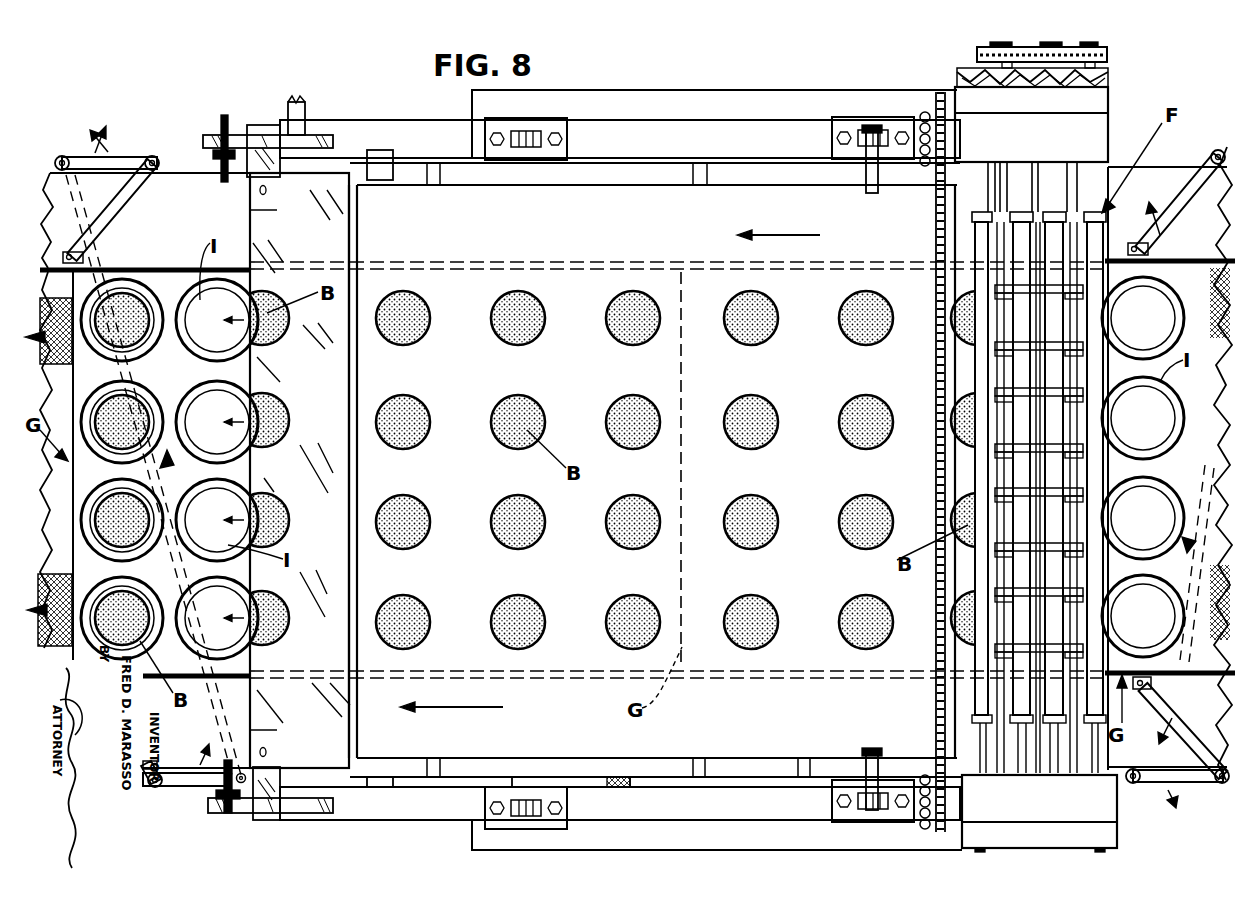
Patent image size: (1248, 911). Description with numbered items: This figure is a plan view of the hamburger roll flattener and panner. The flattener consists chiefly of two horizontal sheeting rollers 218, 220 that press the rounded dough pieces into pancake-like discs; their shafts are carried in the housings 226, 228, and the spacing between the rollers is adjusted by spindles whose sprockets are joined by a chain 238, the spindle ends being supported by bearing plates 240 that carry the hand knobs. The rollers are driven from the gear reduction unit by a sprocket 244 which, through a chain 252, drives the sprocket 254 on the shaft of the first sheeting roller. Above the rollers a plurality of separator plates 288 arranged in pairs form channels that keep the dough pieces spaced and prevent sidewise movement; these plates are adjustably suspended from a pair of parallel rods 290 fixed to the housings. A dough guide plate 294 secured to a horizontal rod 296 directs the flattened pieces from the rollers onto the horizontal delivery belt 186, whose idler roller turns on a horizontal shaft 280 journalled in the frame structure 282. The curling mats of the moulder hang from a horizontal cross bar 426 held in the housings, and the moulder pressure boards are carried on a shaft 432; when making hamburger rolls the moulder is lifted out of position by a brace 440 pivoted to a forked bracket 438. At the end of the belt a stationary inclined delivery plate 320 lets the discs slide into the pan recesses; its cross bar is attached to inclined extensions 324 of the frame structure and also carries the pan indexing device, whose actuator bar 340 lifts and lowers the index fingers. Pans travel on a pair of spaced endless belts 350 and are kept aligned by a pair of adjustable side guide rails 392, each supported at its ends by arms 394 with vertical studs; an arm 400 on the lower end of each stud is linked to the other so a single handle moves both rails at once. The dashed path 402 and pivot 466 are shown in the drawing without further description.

The horizontal belt 186 is at (963, 190).
The sheeting roller 218 is at (992, 688).
The sheeting roller 220 is at (1090, 368).
The housing 226 is at (1108, 817).
The housing 228 is at (1110, 84).
The chain 238 is at (934, 474).
The bearing plate 240 is at (958, 113).
The sprocket 244 is at (1082, 63).
The chain 252 is at (1108, 54).
The sprocket 254 is at (978, 53).
The horizontal shaft 280 is at (378, 158).
The frame structure 282 is at (662, 136).
The separator plate 288 is at (1091, 291).
The parallel rod 290 is at (1070, 775).
The dough guide plate 294 is at (1040, 465).
The horizontal rod 296 is at (1037, 177).
The inclined delivery plate 320 is at (257, 222).
The inclined extension 324 is at (307, 130).
The actuator bar 340 is at (298, 100).
The endless belt 350 is at (88, 265).
The side guide rail 392 is at (595, 261).
The arm 394 is at (129, 194).
The arm 400 is at (87, 157).
The belt path 402 is at (125, 386).
The horizontal cross bar 426 is at (983, 202).
The shaft 432 is at (864, 191).
The forked bracket 438 is at (555, 120).
The brace 440 is at (587, 787).
The pivot bolt 466 is at (235, 100).